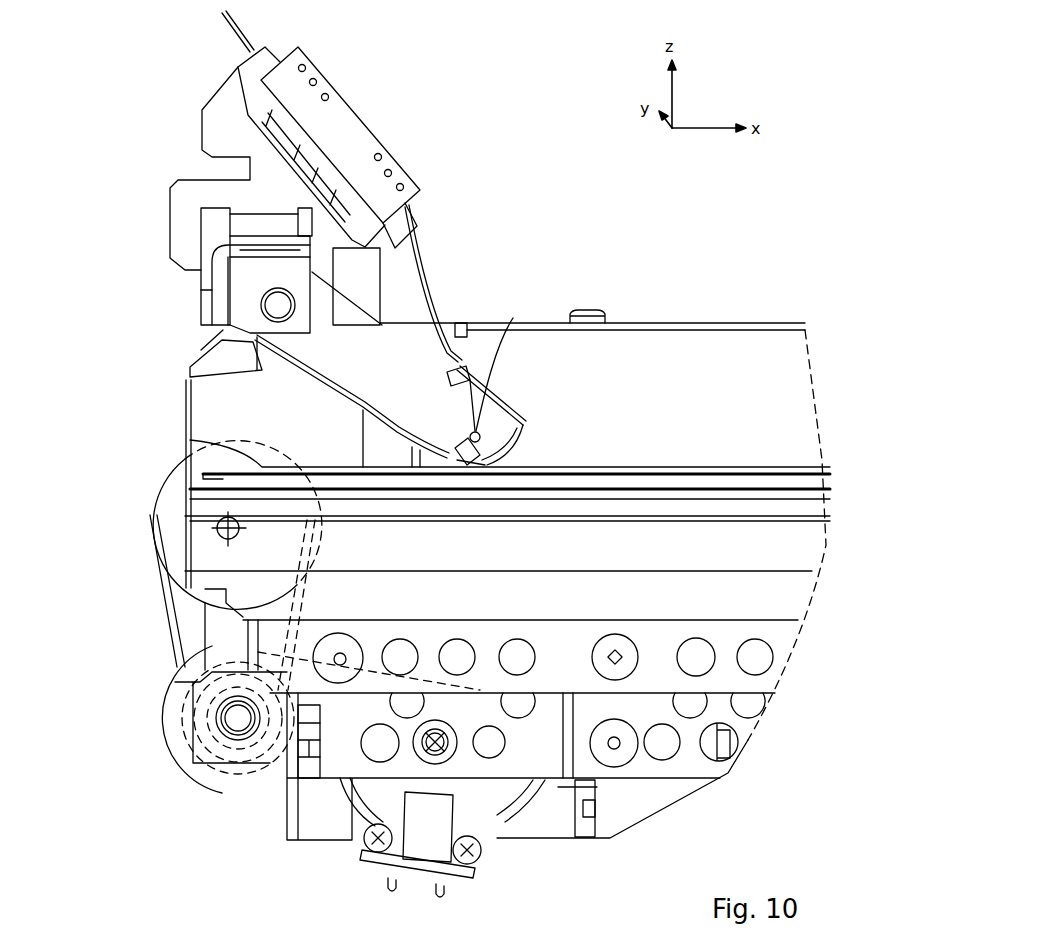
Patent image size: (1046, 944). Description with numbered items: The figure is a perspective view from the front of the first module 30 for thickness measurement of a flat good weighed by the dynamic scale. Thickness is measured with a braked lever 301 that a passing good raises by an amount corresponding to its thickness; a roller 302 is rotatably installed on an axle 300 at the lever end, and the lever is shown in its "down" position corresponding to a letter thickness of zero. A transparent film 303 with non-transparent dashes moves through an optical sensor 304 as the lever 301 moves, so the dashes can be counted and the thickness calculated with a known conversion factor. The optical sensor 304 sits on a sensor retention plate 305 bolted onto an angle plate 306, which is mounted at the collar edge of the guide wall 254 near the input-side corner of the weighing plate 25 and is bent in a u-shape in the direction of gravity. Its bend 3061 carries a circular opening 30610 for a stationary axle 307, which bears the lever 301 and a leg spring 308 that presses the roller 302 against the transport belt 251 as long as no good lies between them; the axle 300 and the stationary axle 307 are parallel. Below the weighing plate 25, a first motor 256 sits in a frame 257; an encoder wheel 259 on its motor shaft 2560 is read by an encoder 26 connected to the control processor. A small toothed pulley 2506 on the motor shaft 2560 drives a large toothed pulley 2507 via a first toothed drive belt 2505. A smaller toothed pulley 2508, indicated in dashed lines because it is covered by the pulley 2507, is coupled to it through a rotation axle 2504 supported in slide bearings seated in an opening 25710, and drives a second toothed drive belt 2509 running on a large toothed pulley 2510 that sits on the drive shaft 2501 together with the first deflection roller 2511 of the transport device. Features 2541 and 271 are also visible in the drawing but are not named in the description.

The first module 30 is at (136, 66).
The weighing plate 25 is at (763, 567).
The encoder 26 is at (440, 862).
The transport belt 251 is at (250, 468).
The guide wall 254 is at (660, 363).
The stop lug 2541 is at (458, 322).
The first motor 256 is at (560, 850).
The motor shaft 2560 is at (497, 779).
The frame 257 is at (700, 764).
The encoder wheel 259 is at (470, 848).
The shaft 271 is at (215, 735).
The drive shaft 2501 is at (185, 508).
The rotation axle 2504 is at (300, 786).
The first toothed drive belt 2505 is at (255, 735).
The toothed pulley 2506 is at (418, 752).
The toothed pulley 2507 is at (175, 740).
The toothed pulley 2508 is at (175, 682).
The second toothed drive belt 2509 is at (165, 620).
The toothed pulley 2510 is at (158, 535).
The first deflection roller 2511 is at (190, 485).
The opening 25710 is at (238, 740).
The axle 300 is at (373, 378).
The lever 301 is at (435, 322).
The roller 302 is at (490, 464).
The transparent film 303 is at (405, 265).
The optical sensor 304 is at (337, 150).
The sensor retention plate 305 is at (188, 192).
The angle plate 306 is at (200, 285).
The bend 3061 is at (270, 272).
The circular opening 30610 is at (266, 302).
The stationary axle 307 is at (268, 312).
The leg spring 308 is at (240, 368).